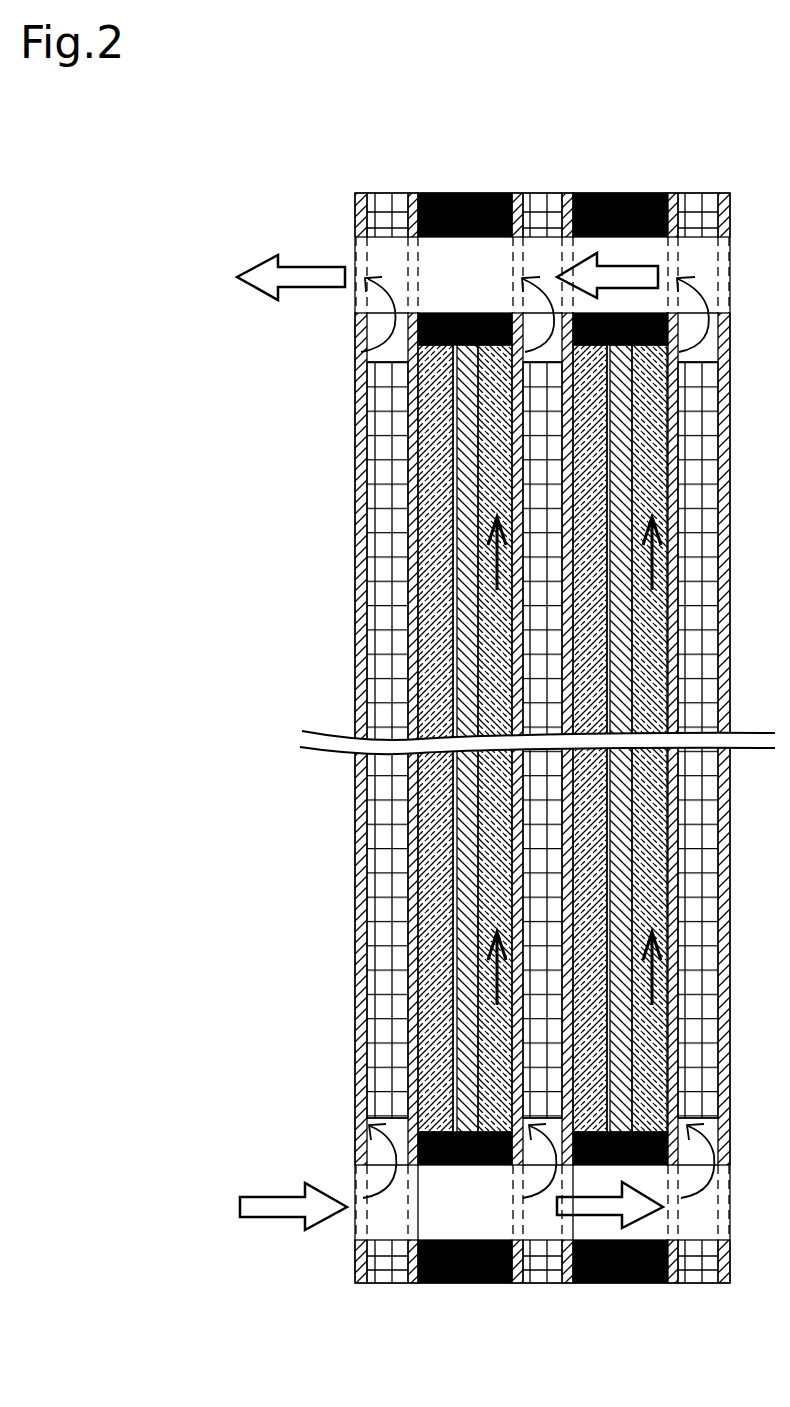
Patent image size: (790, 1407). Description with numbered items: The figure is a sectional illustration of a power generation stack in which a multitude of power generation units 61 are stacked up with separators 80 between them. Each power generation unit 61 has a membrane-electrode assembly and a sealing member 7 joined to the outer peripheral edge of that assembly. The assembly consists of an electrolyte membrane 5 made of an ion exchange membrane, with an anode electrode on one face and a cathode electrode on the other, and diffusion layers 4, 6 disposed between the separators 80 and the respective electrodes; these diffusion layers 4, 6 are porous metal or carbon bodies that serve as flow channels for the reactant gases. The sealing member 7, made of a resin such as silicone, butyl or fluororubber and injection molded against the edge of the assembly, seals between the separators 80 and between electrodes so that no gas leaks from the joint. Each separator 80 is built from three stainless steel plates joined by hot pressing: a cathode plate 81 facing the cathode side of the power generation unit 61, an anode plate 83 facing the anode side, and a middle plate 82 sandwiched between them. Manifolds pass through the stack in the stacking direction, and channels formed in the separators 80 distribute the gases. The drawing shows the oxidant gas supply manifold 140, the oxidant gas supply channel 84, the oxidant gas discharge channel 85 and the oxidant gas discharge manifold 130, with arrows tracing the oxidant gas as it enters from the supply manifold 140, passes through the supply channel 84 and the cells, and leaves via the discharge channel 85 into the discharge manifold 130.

The diffusion layer 4 is at (432, 822).
The electrolyte membrane 5 is at (462, 875).
The diffusion layer 6 is at (490, 919).
The sealing member 7 is at (462, 1285).
The power generation unit 61 is at (470, 714).
The separator 80 is at (496, 714).
The cathode plate 81 is at (357, 417).
The middle plate 82 is at (377, 456).
The anode plate 83 is at (406, 499).
The oxidant gas supply channel 84 is at (360, 1152).
The oxidant gas discharge channel 85 is at (362, 320).
The oxidant gas discharge manifold 130 is at (337, 250).
The oxidant gas supply manifold 140 is at (335, 1247).